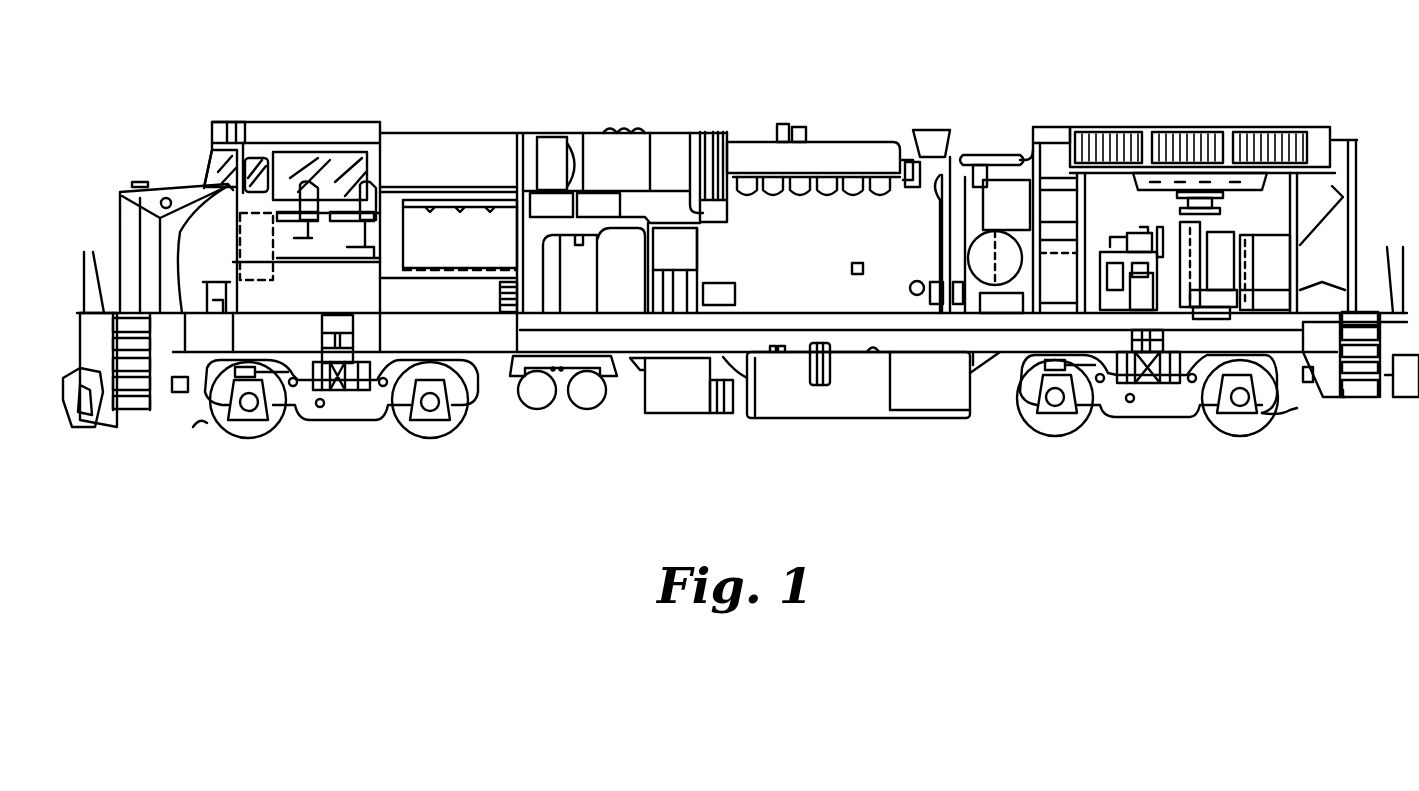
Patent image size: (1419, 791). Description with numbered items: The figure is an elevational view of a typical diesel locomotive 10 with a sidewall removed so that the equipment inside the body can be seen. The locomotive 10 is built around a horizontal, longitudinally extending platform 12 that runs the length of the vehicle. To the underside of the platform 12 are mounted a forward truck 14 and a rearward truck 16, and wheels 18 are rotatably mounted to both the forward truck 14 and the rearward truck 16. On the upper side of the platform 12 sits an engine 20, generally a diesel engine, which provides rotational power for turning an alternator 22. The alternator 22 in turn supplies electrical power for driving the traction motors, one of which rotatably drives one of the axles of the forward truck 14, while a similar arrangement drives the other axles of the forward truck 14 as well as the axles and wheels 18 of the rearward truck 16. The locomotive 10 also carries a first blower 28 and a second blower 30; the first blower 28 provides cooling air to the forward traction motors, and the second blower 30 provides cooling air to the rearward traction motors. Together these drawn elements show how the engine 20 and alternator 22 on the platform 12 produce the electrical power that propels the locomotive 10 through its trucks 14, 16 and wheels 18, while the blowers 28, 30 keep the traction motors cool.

The locomotive 10 is at (657, 90).
The platform 12 is at (534, 342).
The forward truck 14 is at (341, 436).
The rearward truck 16 is at (1142, 430).
The wheels 18 is at (437, 437).
The engine 20 is at (822, 188).
The alternator 22 is at (636, 280).
The first blower 28 is at (553, 145).
The second blower 30 is at (1229, 240).